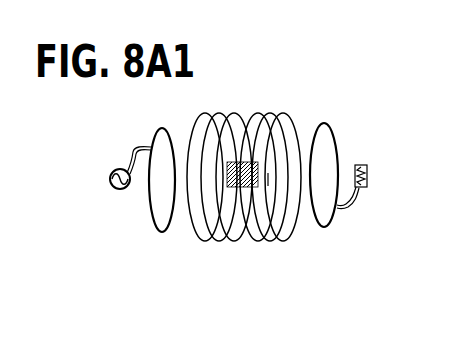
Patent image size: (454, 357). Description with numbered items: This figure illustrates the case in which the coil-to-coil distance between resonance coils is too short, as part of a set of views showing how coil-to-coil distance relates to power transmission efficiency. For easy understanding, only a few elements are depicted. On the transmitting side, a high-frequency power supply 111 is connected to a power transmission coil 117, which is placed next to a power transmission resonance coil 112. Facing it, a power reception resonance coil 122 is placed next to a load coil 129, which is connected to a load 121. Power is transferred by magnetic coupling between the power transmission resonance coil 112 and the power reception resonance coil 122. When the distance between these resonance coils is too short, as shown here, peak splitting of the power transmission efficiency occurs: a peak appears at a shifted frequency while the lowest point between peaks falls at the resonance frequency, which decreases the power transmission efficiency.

The high-frequency power supply 111 is at (116, 190).
The power transmission coil 117 is at (158, 233).
The power transmission resonance coil 112 is at (200, 241).
The power reception resonance coil 122 is at (272, 238).
The load coil 129 is at (320, 228).
The load 121 is at (362, 190).